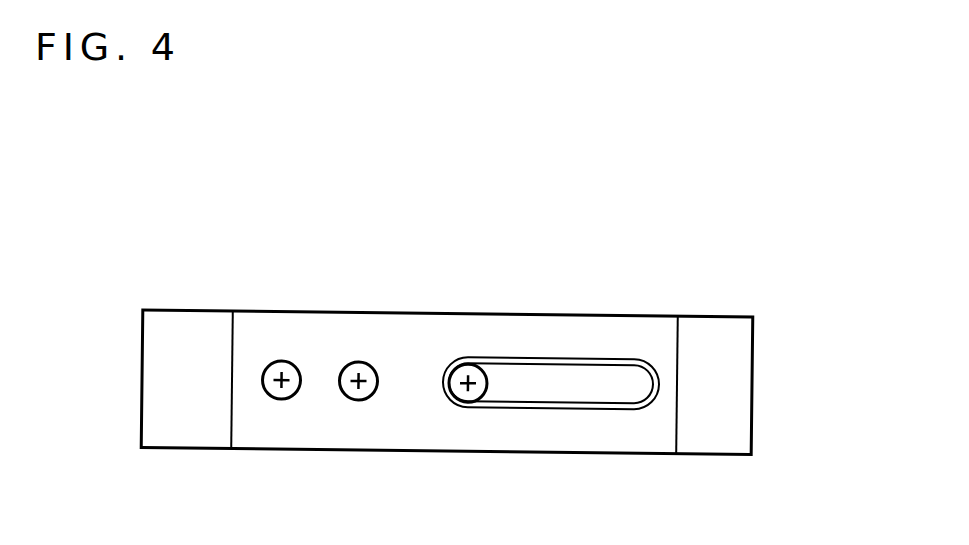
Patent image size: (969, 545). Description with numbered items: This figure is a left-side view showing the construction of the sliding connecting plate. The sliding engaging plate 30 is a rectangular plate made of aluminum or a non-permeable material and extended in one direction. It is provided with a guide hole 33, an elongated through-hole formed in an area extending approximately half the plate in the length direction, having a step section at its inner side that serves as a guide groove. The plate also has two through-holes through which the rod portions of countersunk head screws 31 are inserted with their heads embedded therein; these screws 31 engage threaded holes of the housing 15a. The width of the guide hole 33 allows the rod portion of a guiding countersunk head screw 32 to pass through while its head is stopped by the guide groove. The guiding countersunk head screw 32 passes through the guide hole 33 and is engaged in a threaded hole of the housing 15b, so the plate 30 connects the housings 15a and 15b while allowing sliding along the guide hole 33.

The housing 15a is at (138, 363).
The housing 15b is at (780, 386).
The sliding engaging plate 30 is at (447, 343).
The countersunk head screws 31 is at (337, 443).
The guiding countersunk head screw 32 is at (483, 442).
The guide hole 33 is at (550, 439).